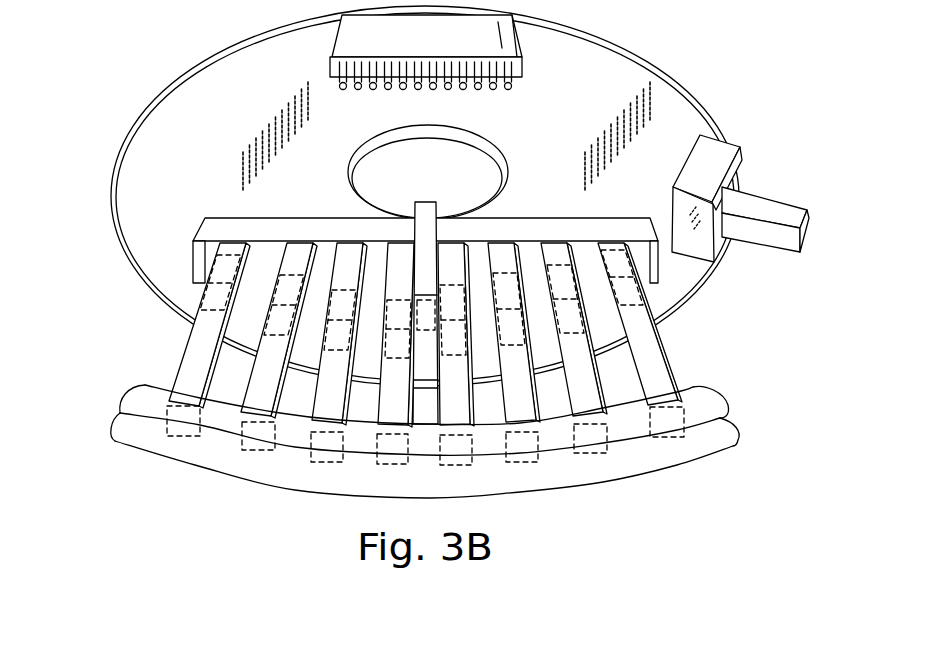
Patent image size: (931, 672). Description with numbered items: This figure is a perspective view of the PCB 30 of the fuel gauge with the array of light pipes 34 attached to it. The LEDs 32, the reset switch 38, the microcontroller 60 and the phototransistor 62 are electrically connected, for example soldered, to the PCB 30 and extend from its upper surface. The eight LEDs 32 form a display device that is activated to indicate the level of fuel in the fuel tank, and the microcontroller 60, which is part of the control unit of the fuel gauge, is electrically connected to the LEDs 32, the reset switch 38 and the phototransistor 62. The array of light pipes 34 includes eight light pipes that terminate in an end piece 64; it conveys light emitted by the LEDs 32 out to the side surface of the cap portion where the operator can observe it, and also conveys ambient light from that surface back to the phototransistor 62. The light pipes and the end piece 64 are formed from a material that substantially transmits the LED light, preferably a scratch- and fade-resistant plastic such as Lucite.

The PCB 30 is at (550, 116).
The LEDs 32 is at (180, 253).
The array of light pipes 34 is at (335, 398).
The reset switch 38 is at (728, 130).
The microcontroller 60 is at (444, 46).
The phototransistor 62 is at (427, 290).
The end piece 64 is at (123, 410).